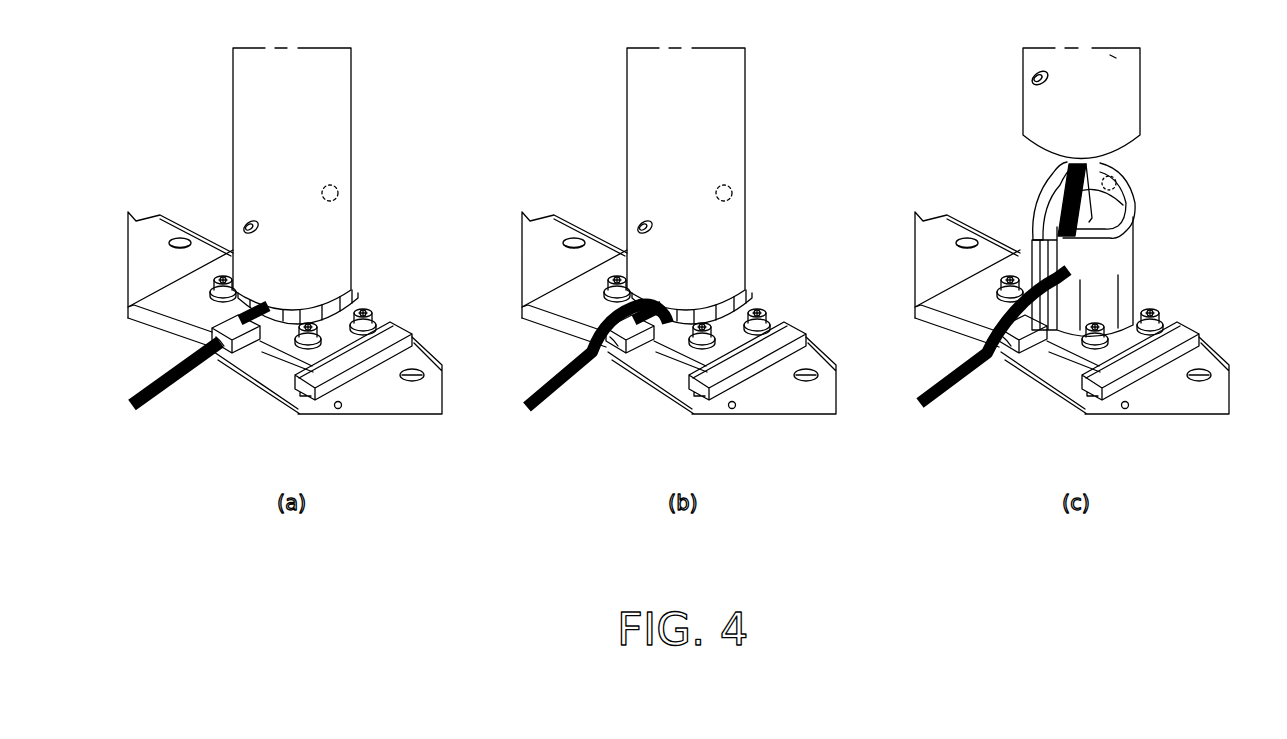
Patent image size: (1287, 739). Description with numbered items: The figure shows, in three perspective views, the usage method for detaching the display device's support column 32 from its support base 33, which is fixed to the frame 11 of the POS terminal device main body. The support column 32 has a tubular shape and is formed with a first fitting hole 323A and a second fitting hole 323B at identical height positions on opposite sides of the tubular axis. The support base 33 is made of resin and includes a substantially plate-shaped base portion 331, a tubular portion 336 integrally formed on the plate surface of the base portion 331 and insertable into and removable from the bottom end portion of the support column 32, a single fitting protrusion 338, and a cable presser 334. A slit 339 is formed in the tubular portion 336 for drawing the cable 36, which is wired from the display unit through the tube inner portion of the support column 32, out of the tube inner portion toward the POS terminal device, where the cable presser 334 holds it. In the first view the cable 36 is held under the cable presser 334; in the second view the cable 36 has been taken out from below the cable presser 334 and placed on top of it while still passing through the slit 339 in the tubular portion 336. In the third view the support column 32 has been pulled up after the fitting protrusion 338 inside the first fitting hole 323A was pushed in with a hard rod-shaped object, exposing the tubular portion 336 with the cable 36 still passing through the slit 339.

The frame 11 is at (387, 397).
The support column 32 is at (338, 112).
The first fitting hole 323A is at (338, 191).
The second fitting hole 323B is at (248, 223).
The support base 33 is at (270, 367).
The base portion 331 is at (337, 337).
The cable presser 334 is at (625, 328).
The tubular portion 336 is at (312, 315).
The fitting protrusion 338 is at (1128, 170).
The slit 339 is at (1047, 198).
The cable 36 is at (179, 388).